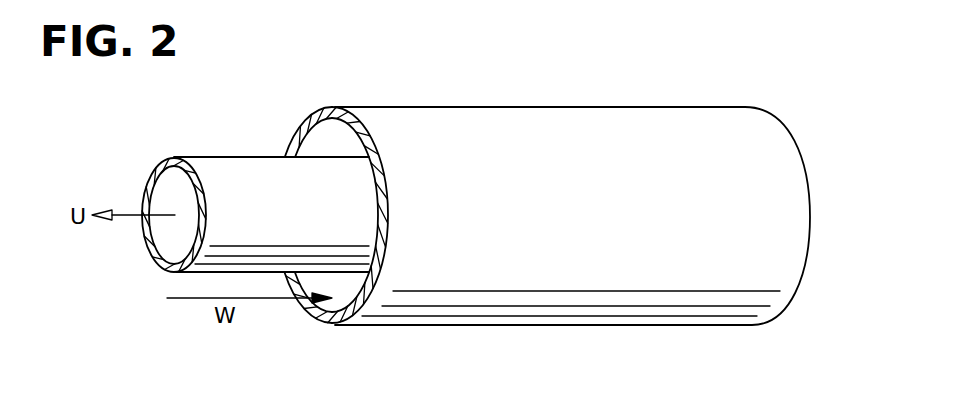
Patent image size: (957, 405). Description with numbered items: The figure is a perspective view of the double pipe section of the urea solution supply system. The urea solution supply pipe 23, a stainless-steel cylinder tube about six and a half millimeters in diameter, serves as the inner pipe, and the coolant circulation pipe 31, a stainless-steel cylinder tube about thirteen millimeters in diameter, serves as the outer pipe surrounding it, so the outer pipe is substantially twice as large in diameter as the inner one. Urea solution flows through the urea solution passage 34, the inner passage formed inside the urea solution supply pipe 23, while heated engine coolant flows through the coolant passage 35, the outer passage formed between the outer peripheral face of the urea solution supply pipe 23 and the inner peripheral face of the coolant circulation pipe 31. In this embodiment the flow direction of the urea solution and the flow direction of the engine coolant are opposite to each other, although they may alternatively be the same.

The urea solution supply pipe 23 is at (227, 157).
The urea solution passage 34 is at (168, 182).
The coolant circulation pipe 31 is at (540, 108).
The coolant passage 35 is at (327, 128).